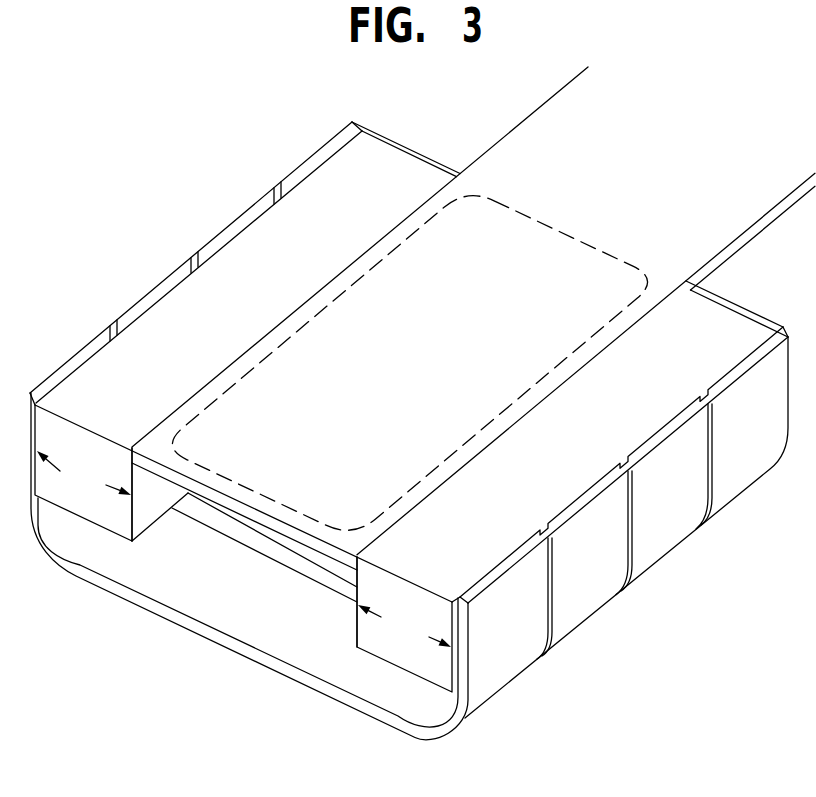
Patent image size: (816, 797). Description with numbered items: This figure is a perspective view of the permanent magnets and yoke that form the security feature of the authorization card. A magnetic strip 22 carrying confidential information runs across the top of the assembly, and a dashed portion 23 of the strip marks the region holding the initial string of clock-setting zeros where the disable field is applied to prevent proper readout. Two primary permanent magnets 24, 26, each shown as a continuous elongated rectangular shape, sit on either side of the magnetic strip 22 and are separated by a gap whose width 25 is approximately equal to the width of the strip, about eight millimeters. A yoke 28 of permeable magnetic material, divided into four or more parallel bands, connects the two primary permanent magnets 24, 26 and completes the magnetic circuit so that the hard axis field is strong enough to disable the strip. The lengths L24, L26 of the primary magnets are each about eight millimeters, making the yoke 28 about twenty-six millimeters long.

The magnetic strip 22 is at (563, 116).
The dashed portion 23 is at (310, 307).
The primary permanent magnet 24 is at (97, 510).
The width of the gap 25 is at (345, 642).
The primary permanent magnet 26 is at (410, 652).
The yoke 28 is at (570, 617).
The length of primary magnet L24 is at (84, 473).
The length of primary magnet L26 is at (404, 626).